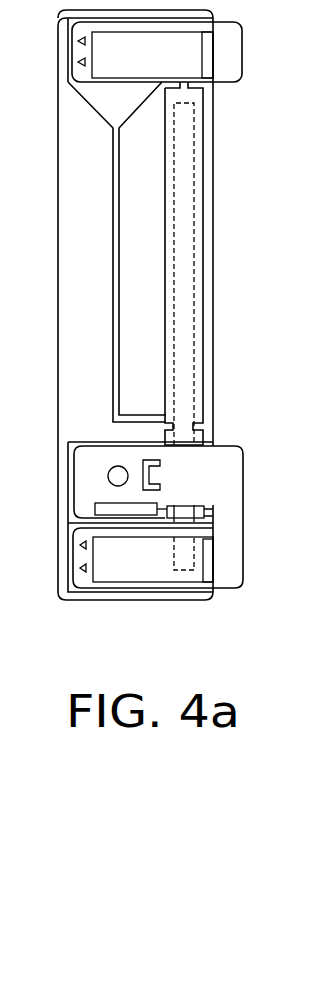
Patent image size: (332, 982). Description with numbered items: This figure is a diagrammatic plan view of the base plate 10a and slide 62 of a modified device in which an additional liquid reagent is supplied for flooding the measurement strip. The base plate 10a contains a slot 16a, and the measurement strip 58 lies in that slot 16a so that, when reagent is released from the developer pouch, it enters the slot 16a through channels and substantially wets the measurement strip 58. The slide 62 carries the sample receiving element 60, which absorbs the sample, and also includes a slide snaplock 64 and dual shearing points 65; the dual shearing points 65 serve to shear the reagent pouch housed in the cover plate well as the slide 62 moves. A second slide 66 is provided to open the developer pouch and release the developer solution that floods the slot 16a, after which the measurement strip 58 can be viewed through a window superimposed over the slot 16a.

The base plate 10a is at (67, 595).
The slot 16a is at (203, 253).
The measurement strip 58 is at (183, 360).
The sample receiving element 60 is at (125, 477).
The slide 62 is at (243, 587).
The slide snaplock 64 is at (147, 460).
The dual shearing points 65 is at (80, 568).
The second slide 66 is at (238, 83).